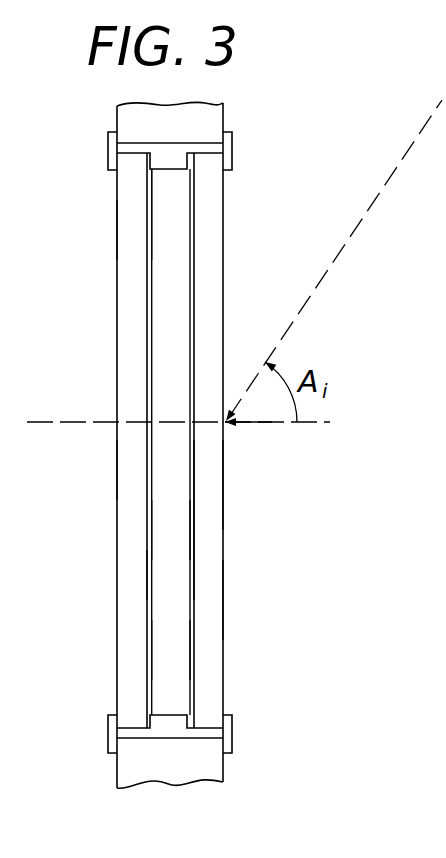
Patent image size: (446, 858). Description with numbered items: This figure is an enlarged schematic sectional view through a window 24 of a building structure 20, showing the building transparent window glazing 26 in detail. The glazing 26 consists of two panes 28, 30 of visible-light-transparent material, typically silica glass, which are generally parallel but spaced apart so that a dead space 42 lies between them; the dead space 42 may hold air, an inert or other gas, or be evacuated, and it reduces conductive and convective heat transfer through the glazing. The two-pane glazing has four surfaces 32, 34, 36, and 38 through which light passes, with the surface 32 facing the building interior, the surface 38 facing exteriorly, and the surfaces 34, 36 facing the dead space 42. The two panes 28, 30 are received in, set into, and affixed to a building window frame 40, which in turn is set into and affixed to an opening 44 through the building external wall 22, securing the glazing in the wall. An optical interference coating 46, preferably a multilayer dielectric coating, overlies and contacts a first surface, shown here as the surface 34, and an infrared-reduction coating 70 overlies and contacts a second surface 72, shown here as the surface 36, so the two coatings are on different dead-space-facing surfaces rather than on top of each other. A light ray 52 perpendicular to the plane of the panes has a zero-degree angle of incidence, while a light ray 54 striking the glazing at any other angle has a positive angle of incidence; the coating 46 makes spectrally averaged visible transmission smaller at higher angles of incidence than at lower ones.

The building structure 20 is at (93, 110).
The building external wall 22 is at (223, 112).
The window 24 is at (105, 244).
The building transparent window glazing 26 is at (228, 597).
The pane 28 is at (132, 572).
The pane 30 is at (212, 565).
The surface 32 is at (117, 475).
The surface 34 is at (152, 480).
The surface 36 is at (188, 540).
The surface 38 is at (223, 485).
The building window frame 40 is at (233, 149).
The dead space 42 is at (177, 648).
The opening 44 is at (207, 147).
The optical interference coating 46 is at (152, 247).
The light ray 52 is at (282, 422).
The light ray 54 is at (327, 273).
The infrared-reduction coating 70 is at (190, 283).
The second surface 72 is at (192, 322).